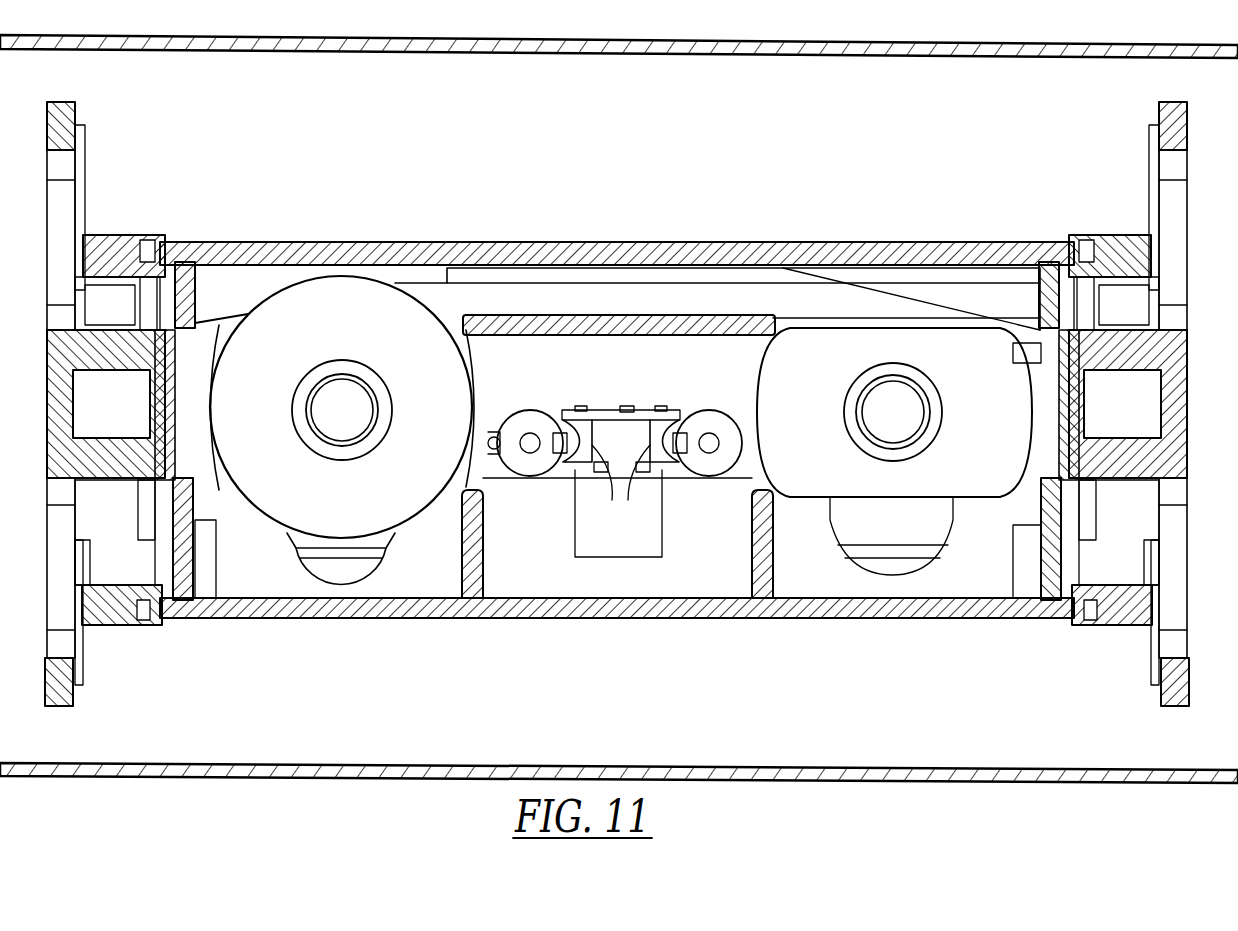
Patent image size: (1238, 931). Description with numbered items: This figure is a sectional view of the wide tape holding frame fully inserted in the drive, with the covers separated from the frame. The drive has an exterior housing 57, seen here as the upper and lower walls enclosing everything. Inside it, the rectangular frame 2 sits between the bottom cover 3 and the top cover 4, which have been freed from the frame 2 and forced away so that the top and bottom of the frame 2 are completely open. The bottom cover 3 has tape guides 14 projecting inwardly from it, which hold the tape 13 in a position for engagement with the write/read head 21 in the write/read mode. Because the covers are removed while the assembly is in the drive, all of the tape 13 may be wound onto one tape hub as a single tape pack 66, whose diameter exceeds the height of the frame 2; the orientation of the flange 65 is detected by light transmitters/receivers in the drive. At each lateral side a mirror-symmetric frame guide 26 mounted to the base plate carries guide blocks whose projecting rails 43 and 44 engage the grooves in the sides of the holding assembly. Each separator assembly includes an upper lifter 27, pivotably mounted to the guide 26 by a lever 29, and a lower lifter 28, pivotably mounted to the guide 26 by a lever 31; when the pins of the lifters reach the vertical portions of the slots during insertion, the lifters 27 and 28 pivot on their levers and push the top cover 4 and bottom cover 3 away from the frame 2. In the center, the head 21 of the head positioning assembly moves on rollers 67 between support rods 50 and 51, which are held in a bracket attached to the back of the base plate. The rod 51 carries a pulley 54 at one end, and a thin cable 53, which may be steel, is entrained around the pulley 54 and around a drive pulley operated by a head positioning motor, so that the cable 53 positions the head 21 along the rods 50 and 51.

The rectangular frame 2 is at (150, 395).
The bottom cover 3 is at (610, 620).
The top cover 4 is at (520, 245).
The tape 13 is at (865, 452).
The tape guides 14 is at (483, 578).
The write/read head 21 is at (605, 422).
The frame guides 26 is at (70, 102).
The upper lifter 27 is at (110, 235).
The lower lifter 28 is at (108, 628).
The lever 29 is at (85, 180).
The lever 31 is at (82, 660).
The projecting rail 43 is at (115, 335).
The projecting rail 44 is at (125, 480).
The support rod 50 is at (718, 425).
The support rod 51 is at (532, 428).
The cable 53 is at (488, 448).
The pulley 54 is at (490, 440).
The exterior housing 57 is at (900, 40).
The flange 65 is at (465, 360).
The tape pack 66 is at (452, 390).
The rollers 67 is at (642, 448).